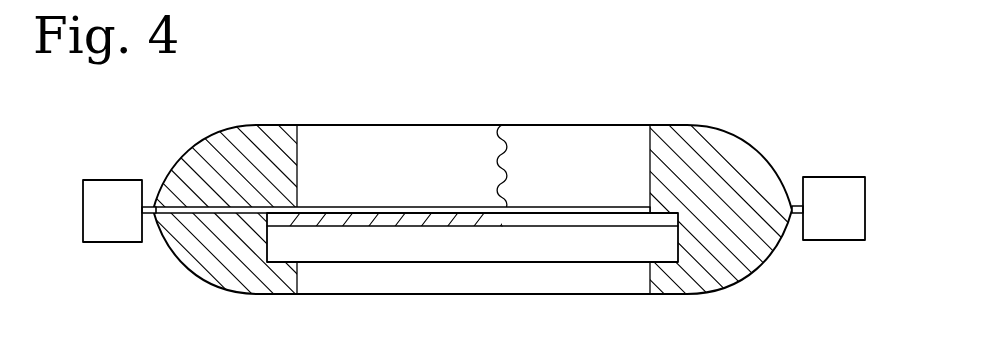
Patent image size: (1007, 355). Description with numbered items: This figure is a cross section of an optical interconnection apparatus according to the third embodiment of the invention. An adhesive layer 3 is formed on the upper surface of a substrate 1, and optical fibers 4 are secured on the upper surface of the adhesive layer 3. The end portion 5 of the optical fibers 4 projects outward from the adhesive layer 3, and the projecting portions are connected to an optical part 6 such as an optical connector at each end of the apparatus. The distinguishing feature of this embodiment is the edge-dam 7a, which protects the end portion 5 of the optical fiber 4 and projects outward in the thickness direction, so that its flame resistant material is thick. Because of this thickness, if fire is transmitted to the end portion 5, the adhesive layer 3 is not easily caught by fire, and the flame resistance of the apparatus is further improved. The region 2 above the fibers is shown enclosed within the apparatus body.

The substrate 1 is at (578, 245).
The hollow space 2 is at (343, 143).
The adhesive layer 3 is at (438, 218).
The optical fibers 4 is at (393, 210).
The end portion 5 is at (152, 217).
The optical part 6 is at (102, 192).
The edge-dam 7a is at (240, 263).